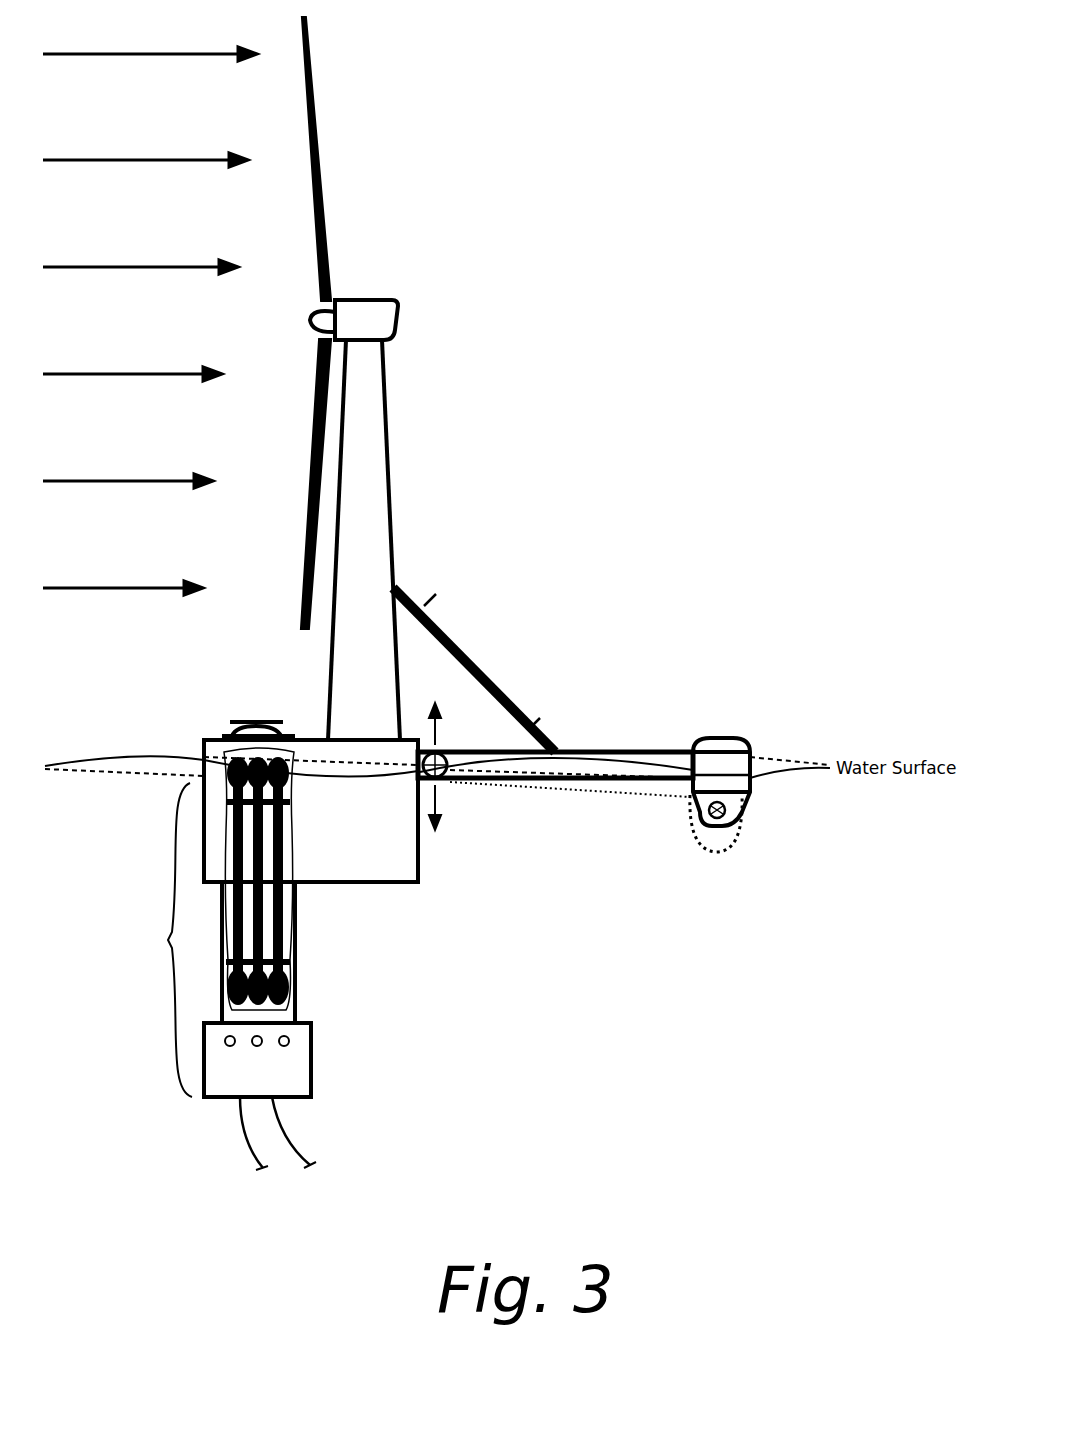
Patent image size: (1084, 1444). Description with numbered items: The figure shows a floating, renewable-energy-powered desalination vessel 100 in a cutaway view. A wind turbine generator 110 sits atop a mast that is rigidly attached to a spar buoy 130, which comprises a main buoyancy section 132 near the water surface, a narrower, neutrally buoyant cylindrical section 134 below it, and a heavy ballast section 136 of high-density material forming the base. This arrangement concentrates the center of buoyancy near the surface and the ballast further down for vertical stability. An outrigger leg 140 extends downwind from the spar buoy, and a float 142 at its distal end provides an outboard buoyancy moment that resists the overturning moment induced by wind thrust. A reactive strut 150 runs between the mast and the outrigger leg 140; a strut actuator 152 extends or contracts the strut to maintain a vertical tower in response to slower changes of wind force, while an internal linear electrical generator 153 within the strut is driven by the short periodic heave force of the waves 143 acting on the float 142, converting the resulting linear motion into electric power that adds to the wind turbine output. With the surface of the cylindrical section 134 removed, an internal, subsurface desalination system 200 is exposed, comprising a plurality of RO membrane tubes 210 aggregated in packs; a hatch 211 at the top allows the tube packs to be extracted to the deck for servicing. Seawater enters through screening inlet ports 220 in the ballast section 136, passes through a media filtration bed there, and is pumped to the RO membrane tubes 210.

The desalination vessel 100 is at (798, 104).
The wind turbine generator 110 is at (400, 300).
The spar buoy 130 is at (155, 940).
The main buoyancy section 132 is at (420, 865).
The cylindrical section 134 is at (296, 1000).
The ballast section 136 is at (312, 1062).
The outrigger leg 140 is at (600, 752).
The float 142 is at (722, 740).
The waves 143 is at (775, 760).
The reactive strut 150 is at (485, 662).
The strut actuator 152 is at (541, 726).
The linear electrical generator 153 is at (426, 601).
The desalination system 200 is at (312, 900).
The RO membrane tubes 210 is at (282, 960).
The hatch 211 is at (258, 722).
The seawater screening inlet ports 220 is at (230, 1046).